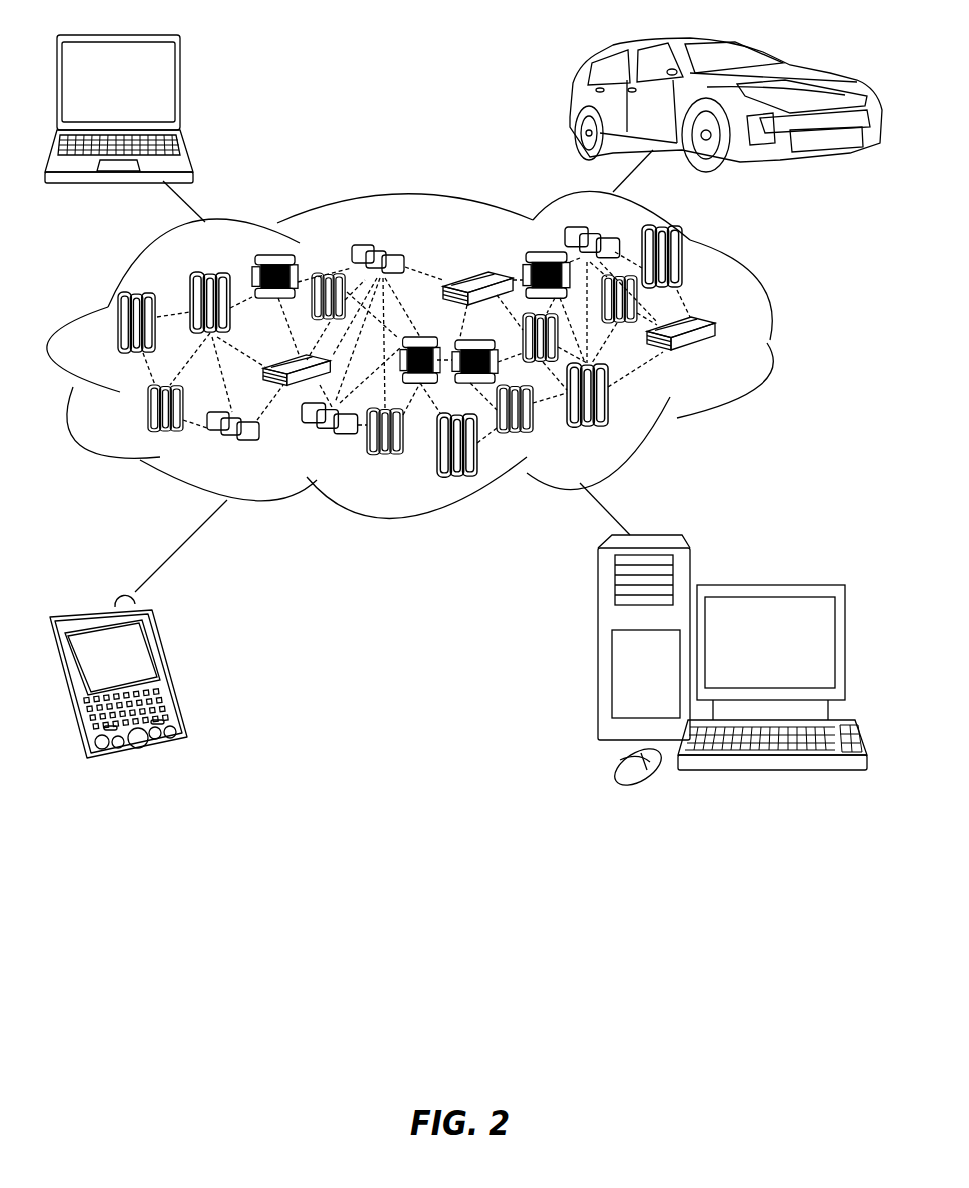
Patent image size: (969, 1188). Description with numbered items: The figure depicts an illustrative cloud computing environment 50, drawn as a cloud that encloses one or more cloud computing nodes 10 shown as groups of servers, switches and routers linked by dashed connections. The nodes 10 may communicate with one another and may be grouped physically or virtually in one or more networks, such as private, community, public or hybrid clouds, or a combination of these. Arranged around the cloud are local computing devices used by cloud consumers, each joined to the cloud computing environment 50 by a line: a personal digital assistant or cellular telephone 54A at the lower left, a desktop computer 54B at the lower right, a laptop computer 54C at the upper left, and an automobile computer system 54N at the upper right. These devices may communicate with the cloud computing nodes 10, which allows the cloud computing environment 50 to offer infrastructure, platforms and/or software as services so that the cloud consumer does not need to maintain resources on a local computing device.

The cloud computing nodes 10 is at (728, 359).
The cloud computing environment 50 is at (770, 340).
The personal digital assistant (PDA) or cellular telephone 54A is at (167, 667).
The desktop computer 54B is at (765, 585).
The laptop computer 54C is at (180, 92).
The automobile computer system 54N is at (572, 102).